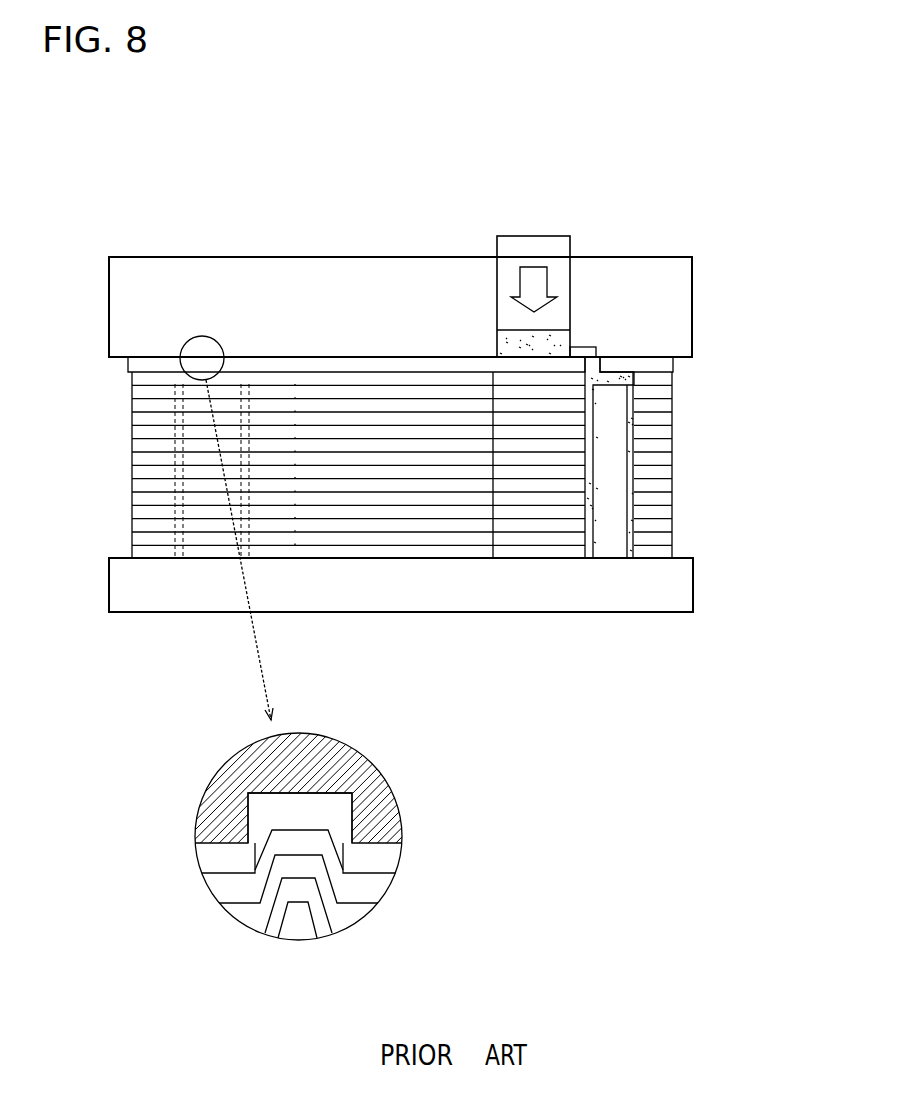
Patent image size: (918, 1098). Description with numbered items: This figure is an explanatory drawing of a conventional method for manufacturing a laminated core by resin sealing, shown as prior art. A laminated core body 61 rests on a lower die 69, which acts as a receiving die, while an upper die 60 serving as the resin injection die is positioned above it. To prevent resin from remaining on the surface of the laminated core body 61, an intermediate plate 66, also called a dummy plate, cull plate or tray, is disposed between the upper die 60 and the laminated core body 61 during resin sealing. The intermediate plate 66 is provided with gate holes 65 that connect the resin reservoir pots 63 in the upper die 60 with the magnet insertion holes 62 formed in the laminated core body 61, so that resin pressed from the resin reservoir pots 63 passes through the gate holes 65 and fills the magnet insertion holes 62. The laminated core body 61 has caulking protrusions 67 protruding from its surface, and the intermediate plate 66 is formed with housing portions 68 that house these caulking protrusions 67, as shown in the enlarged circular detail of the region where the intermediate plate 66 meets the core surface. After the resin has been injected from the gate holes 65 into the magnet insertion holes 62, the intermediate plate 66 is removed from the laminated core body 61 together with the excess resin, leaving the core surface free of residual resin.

The upper die 60 is at (699, 271).
The laminated core body 61 is at (677, 466).
The magnet insertion holes 62 is at (635, 507).
The resin reservoir pots 63 is at (570, 338).
The gate holes 65 is at (597, 422).
The intermediate plate 66 is at (652, 366).
The caulking protrusions 67 is at (308, 840).
The housing portions 68 is at (330, 813).
The lower die 69 is at (641, 600).